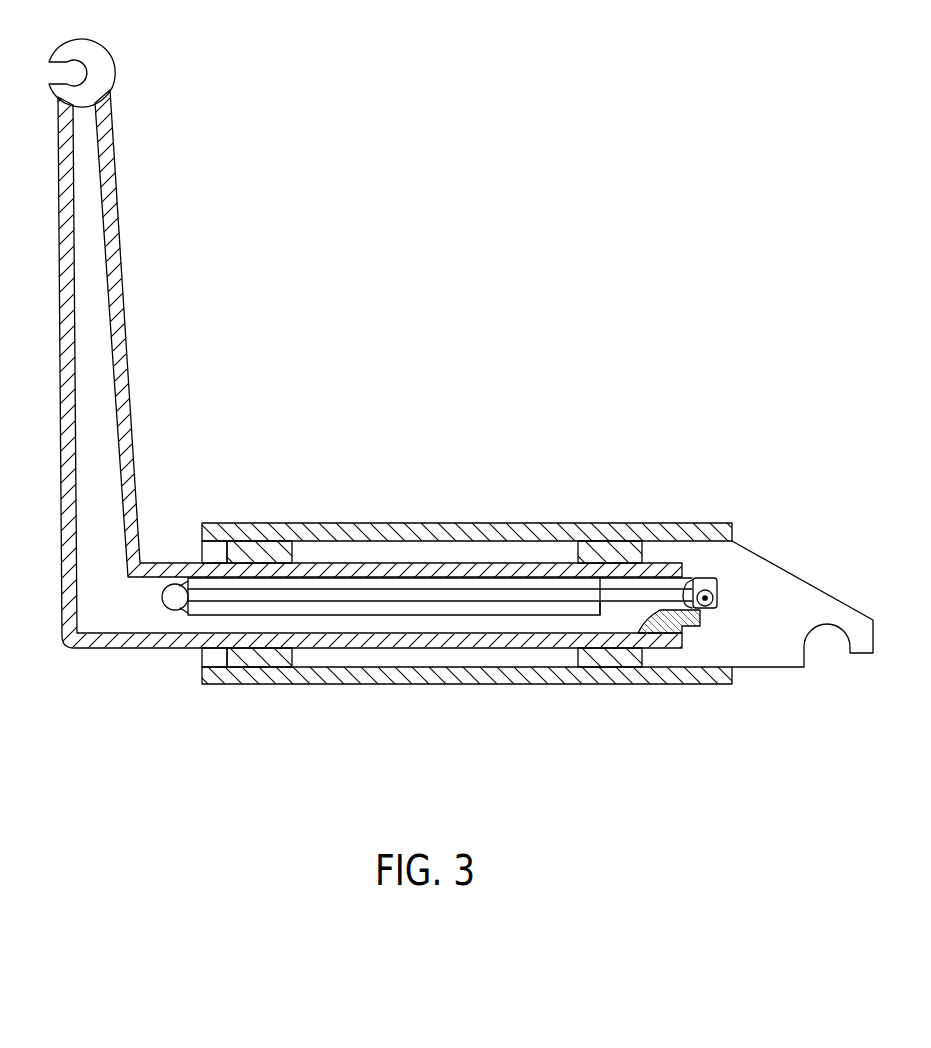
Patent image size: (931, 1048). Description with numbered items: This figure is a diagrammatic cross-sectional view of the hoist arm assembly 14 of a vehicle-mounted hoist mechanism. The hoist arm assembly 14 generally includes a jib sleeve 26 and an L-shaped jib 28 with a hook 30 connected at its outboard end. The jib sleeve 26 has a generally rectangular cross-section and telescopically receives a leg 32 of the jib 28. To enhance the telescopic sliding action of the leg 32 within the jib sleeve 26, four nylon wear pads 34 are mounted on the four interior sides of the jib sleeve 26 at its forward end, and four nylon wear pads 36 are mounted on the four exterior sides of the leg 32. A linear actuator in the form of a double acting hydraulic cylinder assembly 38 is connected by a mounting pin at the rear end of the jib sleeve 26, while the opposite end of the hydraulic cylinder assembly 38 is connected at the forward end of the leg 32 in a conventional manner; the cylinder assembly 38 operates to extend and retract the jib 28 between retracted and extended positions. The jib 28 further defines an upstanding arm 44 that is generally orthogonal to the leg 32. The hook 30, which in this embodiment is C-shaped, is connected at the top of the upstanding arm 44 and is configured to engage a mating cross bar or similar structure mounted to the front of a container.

The hoist arm assembly 14 is at (287, 380).
The jib sleeve 26 is at (353, 685).
The L-shaped jib 28 is at (123, 331).
The hook 30 is at (113, 60).
The leg 32 is at (132, 649).
The nylon wear pads 34 is at (257, 548).
The nylon wear pads 36 is at (612, 552).
The double acting hydraulic cylinder assembly 38 is at (397, 568).
The upstanding arm 44 is at (117, 222).